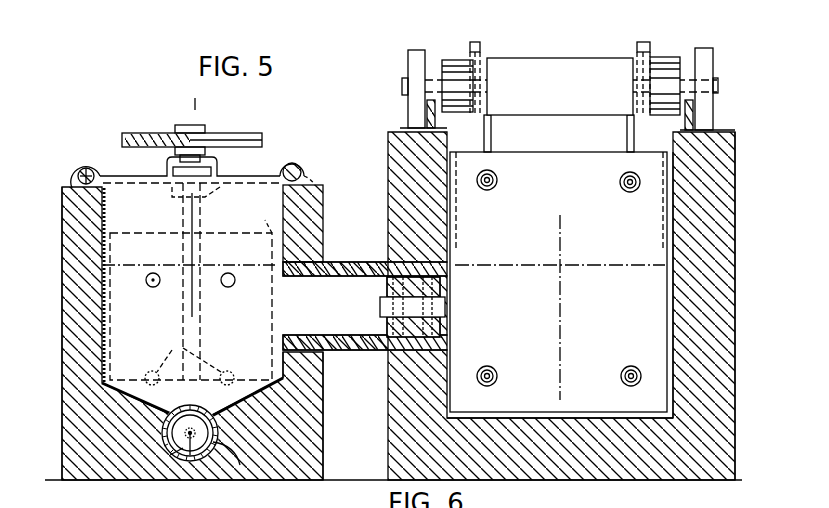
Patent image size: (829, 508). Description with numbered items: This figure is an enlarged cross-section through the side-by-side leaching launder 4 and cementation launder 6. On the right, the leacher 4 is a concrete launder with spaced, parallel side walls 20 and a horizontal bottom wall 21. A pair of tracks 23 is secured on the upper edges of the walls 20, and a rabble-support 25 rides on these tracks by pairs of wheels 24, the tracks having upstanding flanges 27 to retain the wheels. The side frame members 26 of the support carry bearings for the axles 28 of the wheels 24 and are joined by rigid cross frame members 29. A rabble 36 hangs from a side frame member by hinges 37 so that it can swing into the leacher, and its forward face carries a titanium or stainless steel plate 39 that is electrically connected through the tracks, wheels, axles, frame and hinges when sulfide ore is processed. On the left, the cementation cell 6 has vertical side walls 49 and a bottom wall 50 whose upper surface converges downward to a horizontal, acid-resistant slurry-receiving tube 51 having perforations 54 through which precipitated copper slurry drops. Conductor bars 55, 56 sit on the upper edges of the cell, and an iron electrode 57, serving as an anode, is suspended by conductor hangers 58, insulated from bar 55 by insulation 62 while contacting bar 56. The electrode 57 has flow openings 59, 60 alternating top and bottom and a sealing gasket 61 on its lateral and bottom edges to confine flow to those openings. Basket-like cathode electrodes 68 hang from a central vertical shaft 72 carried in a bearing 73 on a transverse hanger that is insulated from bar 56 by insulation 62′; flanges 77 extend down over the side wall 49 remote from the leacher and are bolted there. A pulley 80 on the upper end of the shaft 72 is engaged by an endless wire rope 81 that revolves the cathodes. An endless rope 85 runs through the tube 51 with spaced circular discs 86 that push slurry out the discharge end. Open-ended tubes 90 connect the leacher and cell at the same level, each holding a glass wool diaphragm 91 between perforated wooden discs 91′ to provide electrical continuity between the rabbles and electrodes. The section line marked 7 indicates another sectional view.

The horizontal leaching launder 4 is at (740, 222).
The cementation launder 6 is at (58, 384).
The section line 7 is at (191, 98).
The side walls 20 is at (393, 157).
The bottom wall 21 is at (594, 432).
The tracks 23 is at (403, 126).
The wheels 24 is at (420, 50).
The rabble-support 25 is at (672, 52).
The side frame members 26 is at (682, 80).
The upstanding flanges 27 is at (435, 117).
The axles 28 is at (602, 78).
The cross frame members 29 is at (521, 59).
The rabbles 36 is at (666, 355).
The hinges 37 is at (476, 40).
The plate 39 is at (565, 190).
The side walls 49 is at (336, 212).
The bottom wall 50 is at (125, 398).
The slurry-receiving tube 51 is at (173, 457).
The perforations 54 is at (177, 410).
The conductor bar 55 is at (92, 163).
The conductor bar 56 is at (294, 161).
The iron electrodes 57 is at (238, 225).
The conductor hangers 58 is at (84, 164).
The flow opening 59 is at (160, 278).
The flow opening 60 is at (189, 358).
The sealing gasket 61 is at (102, 325).
The electrical insulation 62 is at (78, 190).
The electrical insulation 62′ is at (305, 157).
The electrodes 68 is at (260, 220).
The central vertical shaft 72 is at (223, 180).
The bearing 73 is at (67, 170).
The flanges 77 is at (166, 333).
The pulley 80 is at (239, 133).
The endless wire rope 81 is at (162, 133).
The rope 85 is at (190, 440).
The circular discs 86 is at (213, 442).
The tubes 90 is at (358, 350).
The glass wool diaphragm 91 is at (387, 285).
The perforated wooden discs 91′ is at (468, 244).